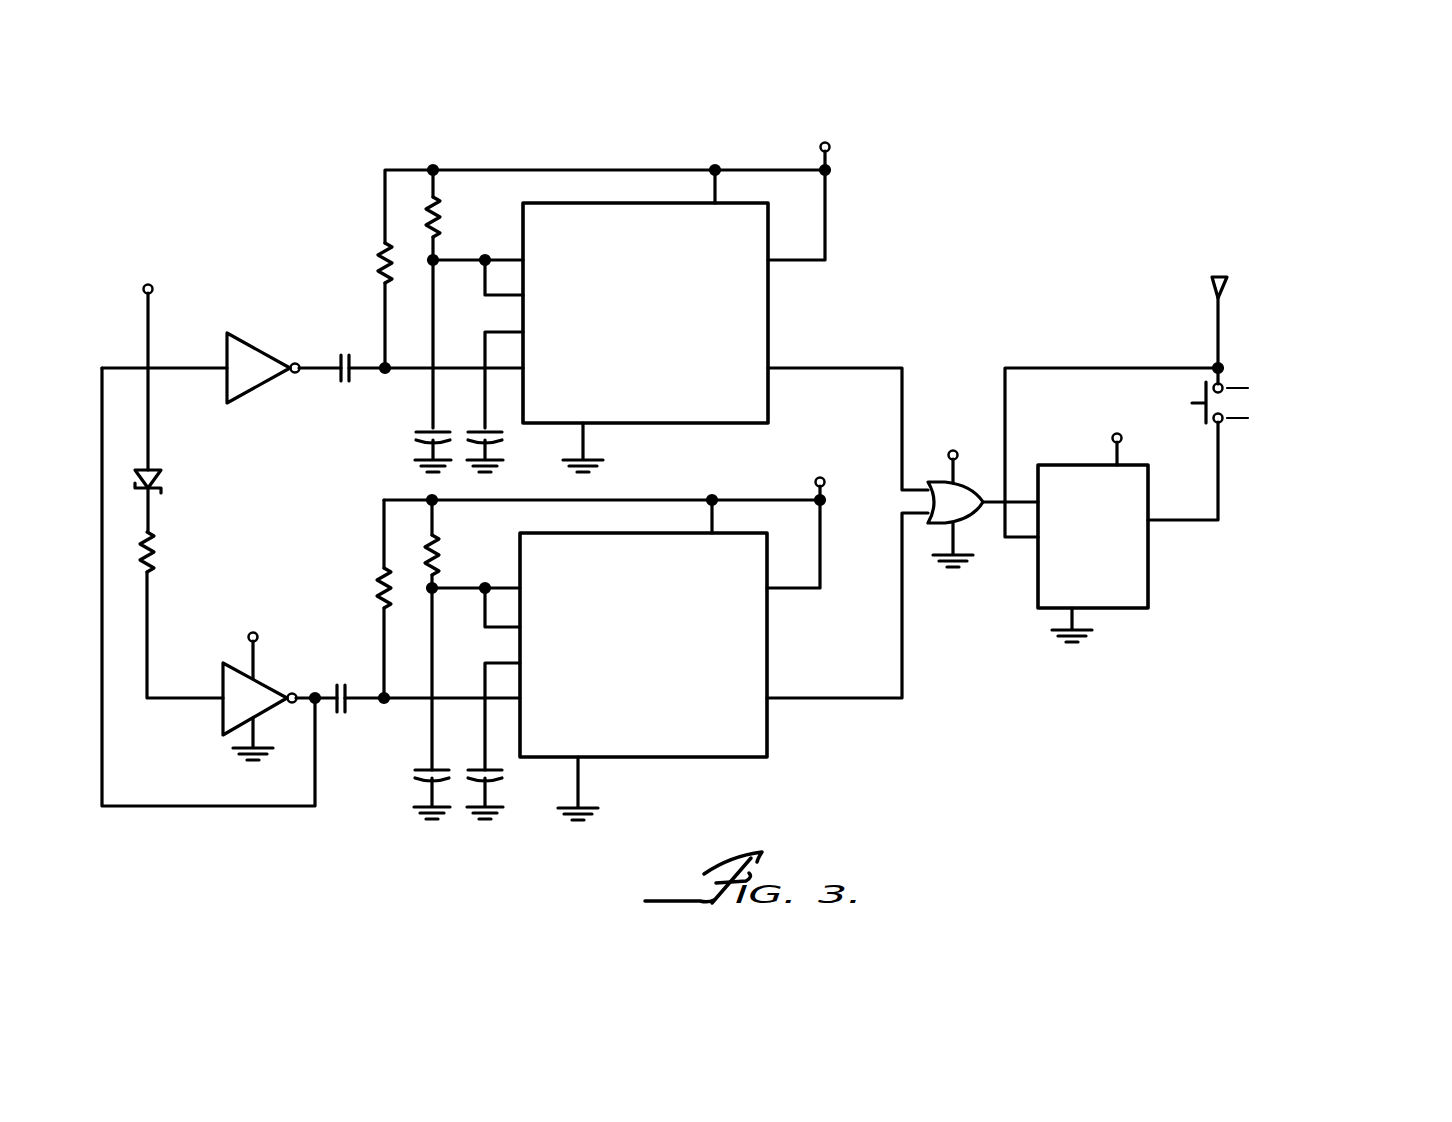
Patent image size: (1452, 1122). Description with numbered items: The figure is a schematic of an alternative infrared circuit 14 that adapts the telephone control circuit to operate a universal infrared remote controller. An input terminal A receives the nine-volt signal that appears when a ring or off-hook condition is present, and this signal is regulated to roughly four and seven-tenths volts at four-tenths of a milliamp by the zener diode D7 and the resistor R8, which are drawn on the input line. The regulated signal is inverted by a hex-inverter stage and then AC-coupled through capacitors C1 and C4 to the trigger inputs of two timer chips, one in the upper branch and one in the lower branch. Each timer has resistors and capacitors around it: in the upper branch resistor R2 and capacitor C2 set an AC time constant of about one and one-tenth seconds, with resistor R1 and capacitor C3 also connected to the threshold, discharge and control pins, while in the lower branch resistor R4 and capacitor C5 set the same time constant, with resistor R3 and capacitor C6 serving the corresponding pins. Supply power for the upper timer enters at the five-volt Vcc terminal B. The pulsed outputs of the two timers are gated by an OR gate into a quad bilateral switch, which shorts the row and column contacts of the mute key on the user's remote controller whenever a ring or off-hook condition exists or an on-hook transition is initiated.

The infrared circuit 14 is at (942, 194).
The input terminal A is at (145, 362).
The 5V Vcc terminal B is at (837, 153).
The resistor R1 27K R1 is at (361, 265).
The resistor R2 is at (448, 217).
The resistor R3 27K R3 is at (359, 596).
The resistor R4 is at (446, 555).
The resistor R8 is at (157, 552).
The capacitor C1 is at (341, 379).
The capacitor C2 is at (409, 439).
The capacitor C3 .01uF C3 is at (501, 439).
The capacitor C4 is at (355, 713).
The capacitor C5 is at (403, 780).
The capacitor C6 .01uF C6 is at (499, 780).
The zener diode D7 is at (221, 495).